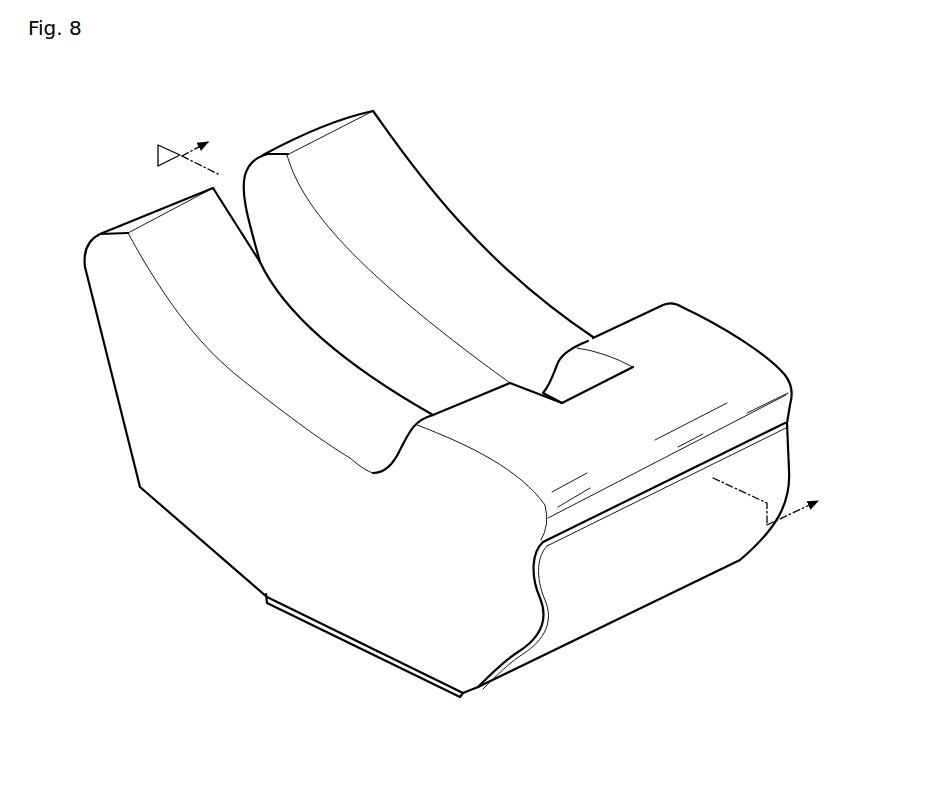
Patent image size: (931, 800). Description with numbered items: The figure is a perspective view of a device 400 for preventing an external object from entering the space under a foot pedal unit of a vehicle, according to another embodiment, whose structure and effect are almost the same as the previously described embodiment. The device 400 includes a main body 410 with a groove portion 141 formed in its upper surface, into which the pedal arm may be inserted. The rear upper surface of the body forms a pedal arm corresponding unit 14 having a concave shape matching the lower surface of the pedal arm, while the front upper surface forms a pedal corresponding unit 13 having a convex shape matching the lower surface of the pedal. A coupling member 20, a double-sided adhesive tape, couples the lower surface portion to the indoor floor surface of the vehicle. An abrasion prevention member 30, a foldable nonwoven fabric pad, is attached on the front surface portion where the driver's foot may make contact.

The device for preventing an external object from entering a space under a foot peda 400 is at (126, 180).
The main body 410 is at (113, 420).
The pedal arm corresponding unit 14 is at (470, 273).
The groove portion 141 is at (420, 367).
The pedal corresponding unit 13 is at (698, 348).
The coupling member 20 is at (285, 615).
The abrasion prevention member 30 is at (625, 598).